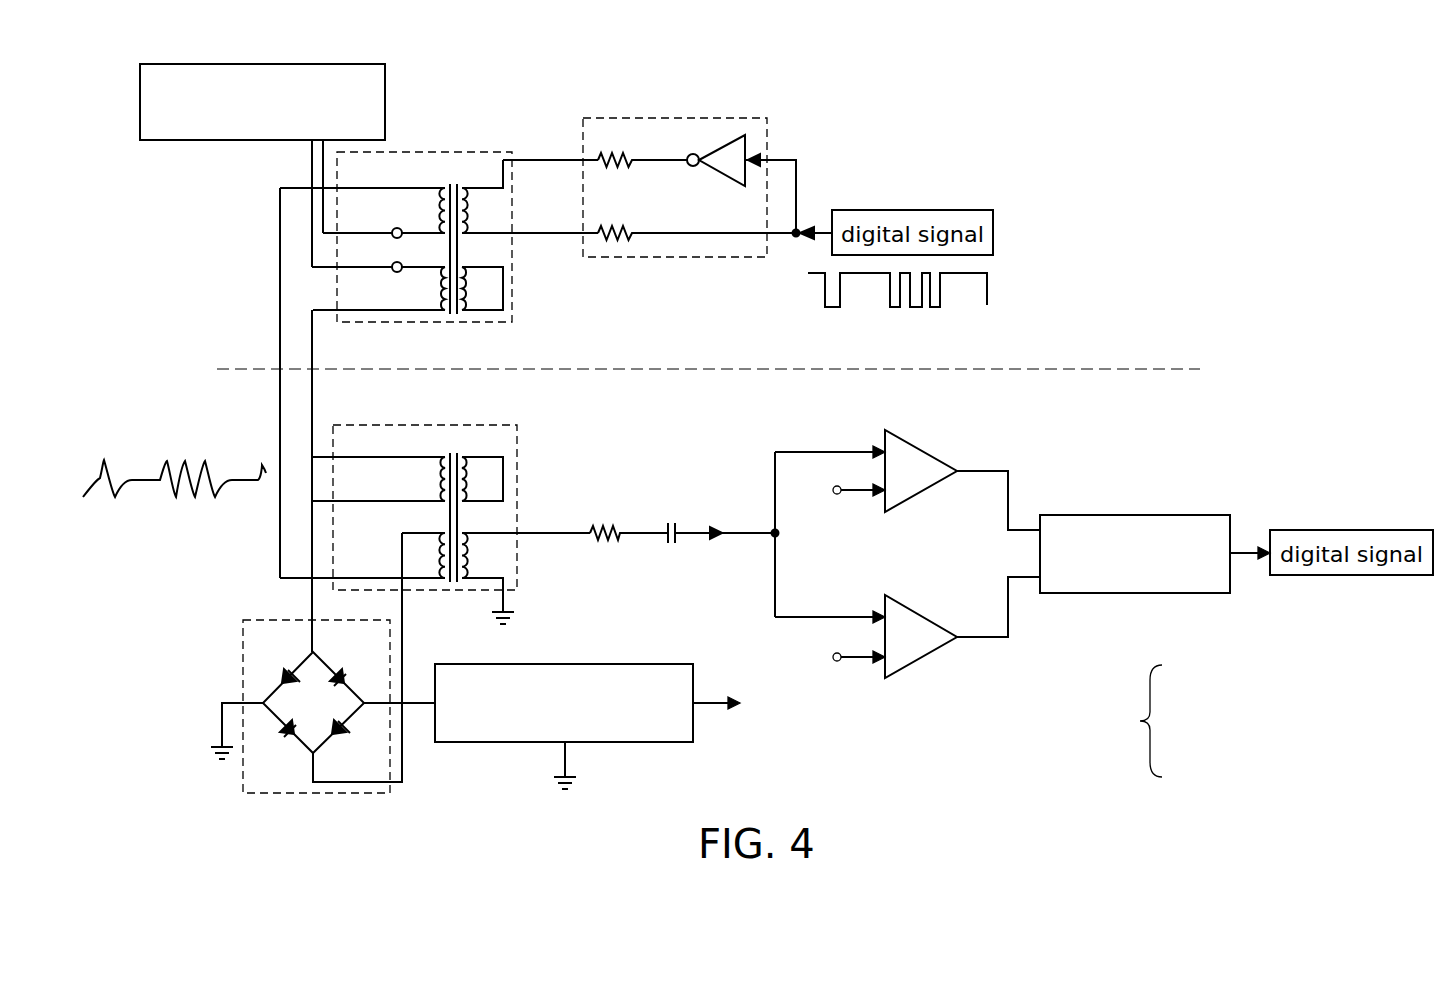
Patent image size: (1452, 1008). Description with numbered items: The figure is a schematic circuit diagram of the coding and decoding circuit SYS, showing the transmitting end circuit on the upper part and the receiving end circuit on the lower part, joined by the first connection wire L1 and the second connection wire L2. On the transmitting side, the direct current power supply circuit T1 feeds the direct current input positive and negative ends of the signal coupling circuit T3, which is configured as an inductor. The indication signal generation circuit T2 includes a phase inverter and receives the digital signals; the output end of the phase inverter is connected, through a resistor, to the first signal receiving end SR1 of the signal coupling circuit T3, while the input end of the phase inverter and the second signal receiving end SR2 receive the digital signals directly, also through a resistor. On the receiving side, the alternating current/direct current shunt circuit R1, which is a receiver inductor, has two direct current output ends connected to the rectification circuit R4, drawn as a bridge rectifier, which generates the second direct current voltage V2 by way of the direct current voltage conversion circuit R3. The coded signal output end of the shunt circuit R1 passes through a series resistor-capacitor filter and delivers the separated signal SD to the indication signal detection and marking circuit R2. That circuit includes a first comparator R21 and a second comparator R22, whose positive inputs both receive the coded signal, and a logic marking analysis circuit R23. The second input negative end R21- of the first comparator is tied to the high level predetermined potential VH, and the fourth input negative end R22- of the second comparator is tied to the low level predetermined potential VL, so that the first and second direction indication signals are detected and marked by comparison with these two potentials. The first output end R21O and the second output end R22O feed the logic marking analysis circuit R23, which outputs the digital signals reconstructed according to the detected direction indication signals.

The direct current power supply circuit T1 is at (137, 100).
The indication signal generation circuit T2 is at (686, 118).
The signal coupling circuit T3 is at (441, 152).
The first signal receiving end SR1 is at (550, 158).
The second signal receiving end SR2 is at (550, 236).
The coding and decoding circuit SYS is at (1050, 138).
The first connection wire L1 is at (263, 383).
The second connection wire L2 is at (328, 481).
The alternating current/direct current shunt circuit R1 is at (517, 438).
The sensed signal SD is at (551, 529).
The direct current voltage conversion circuit R3 is at (568, 664).
The rectification circuit R4 is at (243, 652).
The second direct current voltage V2 is at (734, 705).
The first comparator R21 is at (916, 448).
The second comparator R22 is at (928, 664).
The logic marking analysis circuit R23 is at (1110, 515).
The indication signal detection and marking circuit R2 is at (1154, 721).
The second input negative end R21- is at (884, 497).
The fourth input negative end R22- is at (884, 664).
The first output end R21O is at (964, 474).
The second output end R22O is at (956, 623).
The high level predetermined potential VH is at (841, 490).
The low level predetermined potential VL is at (841, 657).